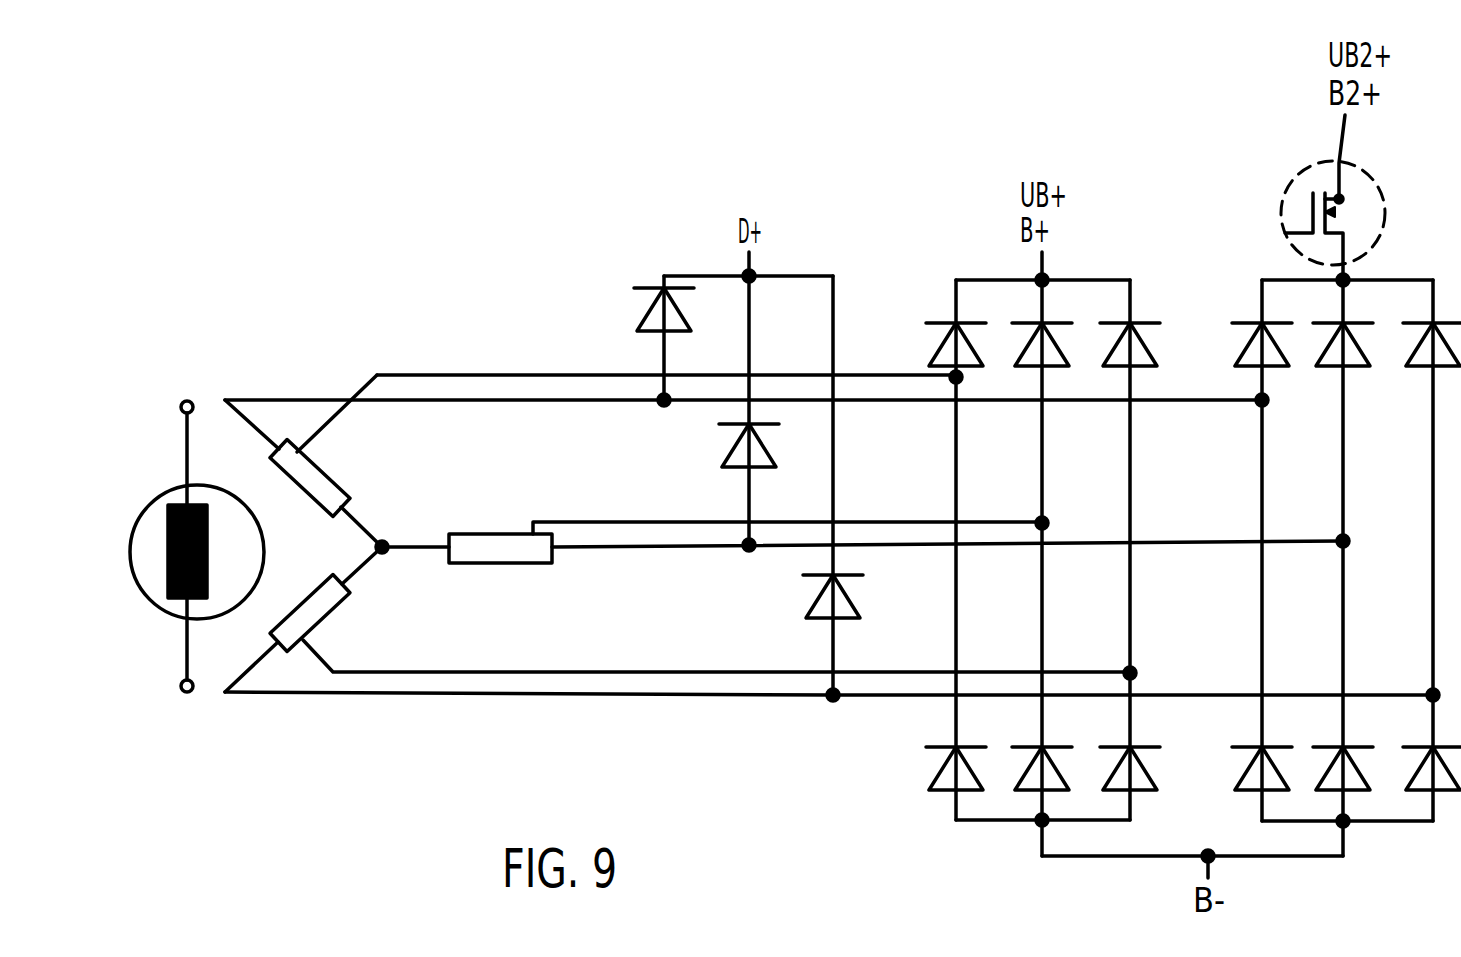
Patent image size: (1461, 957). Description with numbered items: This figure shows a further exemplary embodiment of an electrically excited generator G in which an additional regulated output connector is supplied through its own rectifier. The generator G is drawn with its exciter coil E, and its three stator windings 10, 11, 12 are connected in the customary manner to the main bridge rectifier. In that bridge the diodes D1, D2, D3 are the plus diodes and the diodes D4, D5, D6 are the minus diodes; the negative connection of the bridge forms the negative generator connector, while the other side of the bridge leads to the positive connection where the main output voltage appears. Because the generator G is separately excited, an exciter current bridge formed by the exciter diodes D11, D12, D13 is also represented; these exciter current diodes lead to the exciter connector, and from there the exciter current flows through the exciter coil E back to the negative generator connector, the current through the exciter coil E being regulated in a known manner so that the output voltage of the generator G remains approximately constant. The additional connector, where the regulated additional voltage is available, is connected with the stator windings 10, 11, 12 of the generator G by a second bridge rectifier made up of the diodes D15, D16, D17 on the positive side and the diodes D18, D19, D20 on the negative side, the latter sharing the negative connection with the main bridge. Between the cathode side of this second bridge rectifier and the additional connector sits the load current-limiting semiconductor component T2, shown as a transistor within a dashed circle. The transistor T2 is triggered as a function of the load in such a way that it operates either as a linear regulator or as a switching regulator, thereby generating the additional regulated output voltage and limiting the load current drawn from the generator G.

The generator G is at (207, 546).
The exciter coil E is at (200, 505).
The stator winding 10 is at (502, 534).
The stator winding 11 is at (336, 480).
The stator winding 12 is at (328, 622).
The plus diode D1 is at (938, 345).
The plus diode D2 is at (1024, 345).
The plus diode D3 is at (1112, 345).
The minus diode D4 is at (938, 768).
The minus diode D5 is at (1024, 768).
The minus diode D6 is at (1112, 768).
The exciter diode D11 is at (650, 314).
The exciter diode D12 is at (732, 450).
The exciter diode D13 is at (814, 600).
The bridge rectifier diode D15 is at (1244, 345).
The bridge rectifier diode D16 is at (1325, 345).
The bridge rectifier diode D17 is at (1415, 345).
The bridge rectifier diode D18 is at (1244, 768).
The bridge rectifier diode D19 is at (1325, 768).
The bridge rectifier diode D20 is at (1415, 768).
The load current-limiting semiconductor component T2 is at (1357, 197).